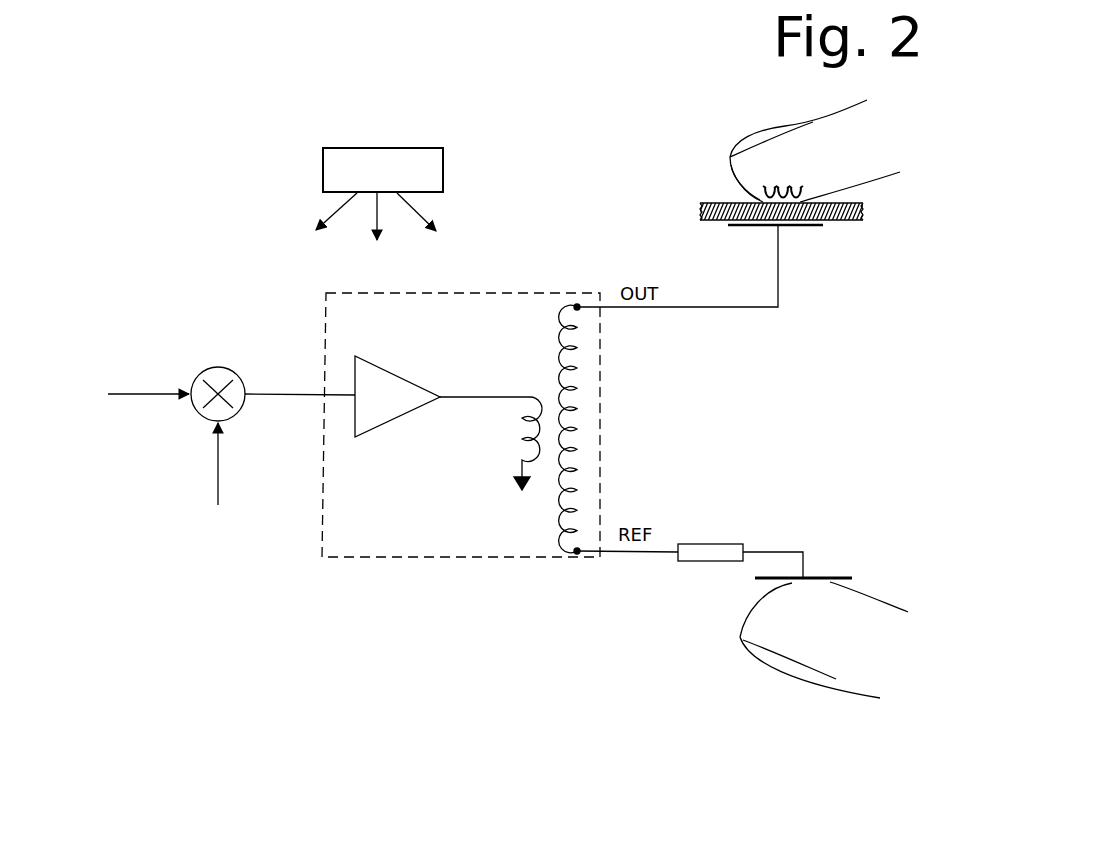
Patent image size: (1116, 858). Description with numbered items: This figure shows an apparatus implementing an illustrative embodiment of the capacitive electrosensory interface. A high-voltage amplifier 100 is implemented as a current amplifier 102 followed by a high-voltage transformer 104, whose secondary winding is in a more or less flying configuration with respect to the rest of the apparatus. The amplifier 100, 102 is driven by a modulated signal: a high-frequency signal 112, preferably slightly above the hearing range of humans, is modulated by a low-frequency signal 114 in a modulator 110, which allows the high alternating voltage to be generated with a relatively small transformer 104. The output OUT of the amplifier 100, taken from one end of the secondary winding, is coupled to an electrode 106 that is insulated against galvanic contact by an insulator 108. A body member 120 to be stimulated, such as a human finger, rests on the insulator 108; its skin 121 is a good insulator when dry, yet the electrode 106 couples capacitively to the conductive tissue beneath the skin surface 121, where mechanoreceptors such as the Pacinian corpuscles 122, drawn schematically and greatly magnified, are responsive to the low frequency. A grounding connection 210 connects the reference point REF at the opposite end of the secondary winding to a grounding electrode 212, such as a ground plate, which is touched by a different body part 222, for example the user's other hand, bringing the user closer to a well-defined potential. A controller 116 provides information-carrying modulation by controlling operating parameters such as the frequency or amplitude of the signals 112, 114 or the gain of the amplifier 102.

The high-voltage amplifier 100 is at (600, 427).
The current amplifier 102 is at (403, 375).
The high-voltage transformer 104 is at (518, 397).
The electrode 106 is at (823, 227).
The insulator 108 is at (848, 222).
The modulator 110 is at (222, 367).
The high-frequency signal 112 is at (155, 390).
The low-frequency signal 114 is at (217, 467).
The controller 116 is at (323, 163).
The body member 120 is at (727, 145).
The skin 121 is at (740, 180).
The Pacinian corpuscles 122 is at (797, 180).
The grounding connection 210 is at (767, 526).
The grounding electrode 212 is at (833, 577).
The body part 222 is at (824, 640).